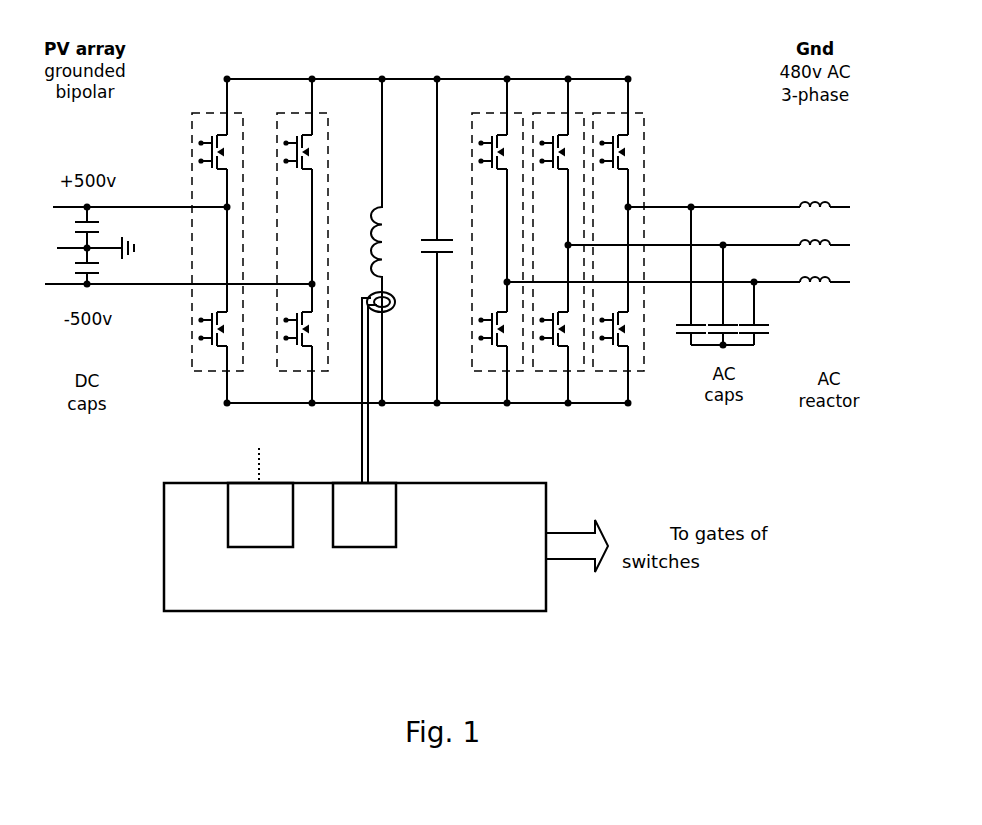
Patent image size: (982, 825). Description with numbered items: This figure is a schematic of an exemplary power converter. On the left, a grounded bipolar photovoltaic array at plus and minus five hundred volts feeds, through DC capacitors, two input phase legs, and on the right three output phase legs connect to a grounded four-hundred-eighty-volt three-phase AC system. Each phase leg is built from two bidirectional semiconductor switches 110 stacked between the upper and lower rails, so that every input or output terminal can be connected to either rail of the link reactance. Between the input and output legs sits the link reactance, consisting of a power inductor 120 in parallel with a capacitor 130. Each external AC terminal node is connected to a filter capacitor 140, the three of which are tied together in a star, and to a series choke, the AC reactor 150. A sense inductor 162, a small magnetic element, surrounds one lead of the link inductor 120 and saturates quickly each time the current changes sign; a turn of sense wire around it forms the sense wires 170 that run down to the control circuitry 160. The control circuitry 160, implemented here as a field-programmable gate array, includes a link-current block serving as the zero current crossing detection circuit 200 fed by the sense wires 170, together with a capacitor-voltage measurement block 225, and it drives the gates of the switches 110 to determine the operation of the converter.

The bidirectional semiconductor switches 110 is at (630, 152).
The power inductor 120 is at (381, 240).
The capacitor 130 is at (427, 238).
The filter capacitor 140 is at (765, 337).
The series choke (inductor) 150 is at (813, 285).
The control circuitry 160 is at (442, 612).
The sense inductor 162 is at (395, 302).
The sense wires 170 is at (370, 420).
The zero current crossing detection circuit 200 is at (397, 523).
The capacitor voltage measurement input 225 is at (259, 549).